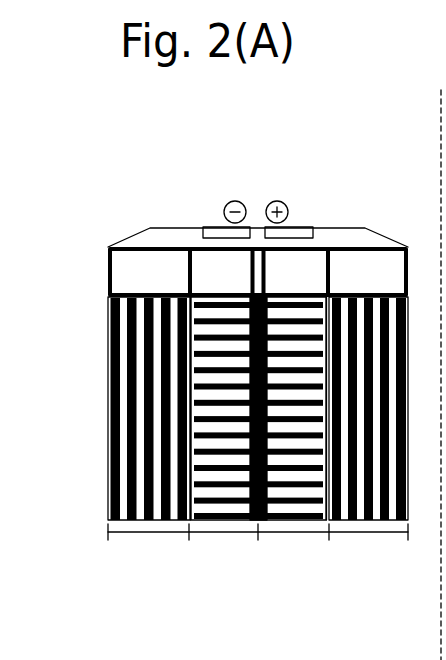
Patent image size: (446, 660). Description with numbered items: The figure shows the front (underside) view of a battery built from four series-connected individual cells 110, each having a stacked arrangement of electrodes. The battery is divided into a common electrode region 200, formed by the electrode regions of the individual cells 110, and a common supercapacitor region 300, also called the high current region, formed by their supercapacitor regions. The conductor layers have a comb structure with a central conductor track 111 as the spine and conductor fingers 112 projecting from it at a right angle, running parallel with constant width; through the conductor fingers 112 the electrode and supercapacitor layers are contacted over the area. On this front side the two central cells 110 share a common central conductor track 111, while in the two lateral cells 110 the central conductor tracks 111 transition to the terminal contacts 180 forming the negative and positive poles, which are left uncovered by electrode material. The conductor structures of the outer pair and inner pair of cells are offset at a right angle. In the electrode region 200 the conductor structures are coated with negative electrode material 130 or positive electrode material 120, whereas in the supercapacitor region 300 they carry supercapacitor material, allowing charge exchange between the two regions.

The common supercapacitor region 300 is at (106, 272).
The common electrode region 200 is at (108, 440).
The terminal contacts 180 is at (222, 233).
The conductor fingers 112 is at (205, 305).
The central conductor track 111 is at (257, 300).
The positive electrode material 120 is at (360, 340).
The negative electrode material 130 is at (135, 466).
The individual cells 110 is at (388, 572).